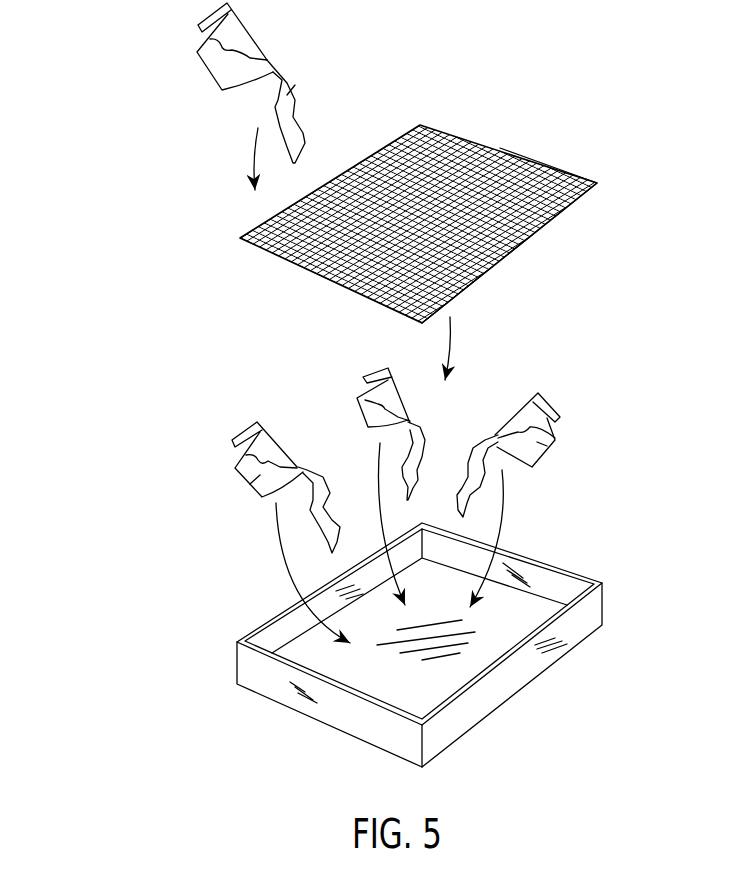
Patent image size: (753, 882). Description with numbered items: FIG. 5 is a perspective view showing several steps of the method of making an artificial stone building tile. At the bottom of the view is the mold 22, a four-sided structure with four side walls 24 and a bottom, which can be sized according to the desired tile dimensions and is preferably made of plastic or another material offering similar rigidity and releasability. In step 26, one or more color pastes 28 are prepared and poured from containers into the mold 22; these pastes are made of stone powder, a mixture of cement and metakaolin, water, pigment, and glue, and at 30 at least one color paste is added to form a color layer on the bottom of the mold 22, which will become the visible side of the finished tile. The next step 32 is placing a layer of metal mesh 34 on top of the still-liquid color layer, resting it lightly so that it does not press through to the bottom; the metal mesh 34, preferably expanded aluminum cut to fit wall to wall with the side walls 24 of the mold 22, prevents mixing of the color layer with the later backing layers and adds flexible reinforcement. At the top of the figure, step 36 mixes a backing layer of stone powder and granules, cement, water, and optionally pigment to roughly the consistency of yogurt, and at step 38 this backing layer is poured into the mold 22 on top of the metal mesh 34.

The mold 22 is at (338, 717).
The side walls 24 is at (540, 583).
The step of preparing and adding color pastes 26 is at (170, 376).
The color pastes 28 is at (247, 483).
The step of adding color paste to form a color layer 30 is at (643, 412).
The step of placing metal mesh 32 is at (298, 272).
The metal mesh 34 is at (500, 148).
The backing layer mixing step 36 is at (157, 29).
The step of adding the backing layer 38 is at (303, 82).